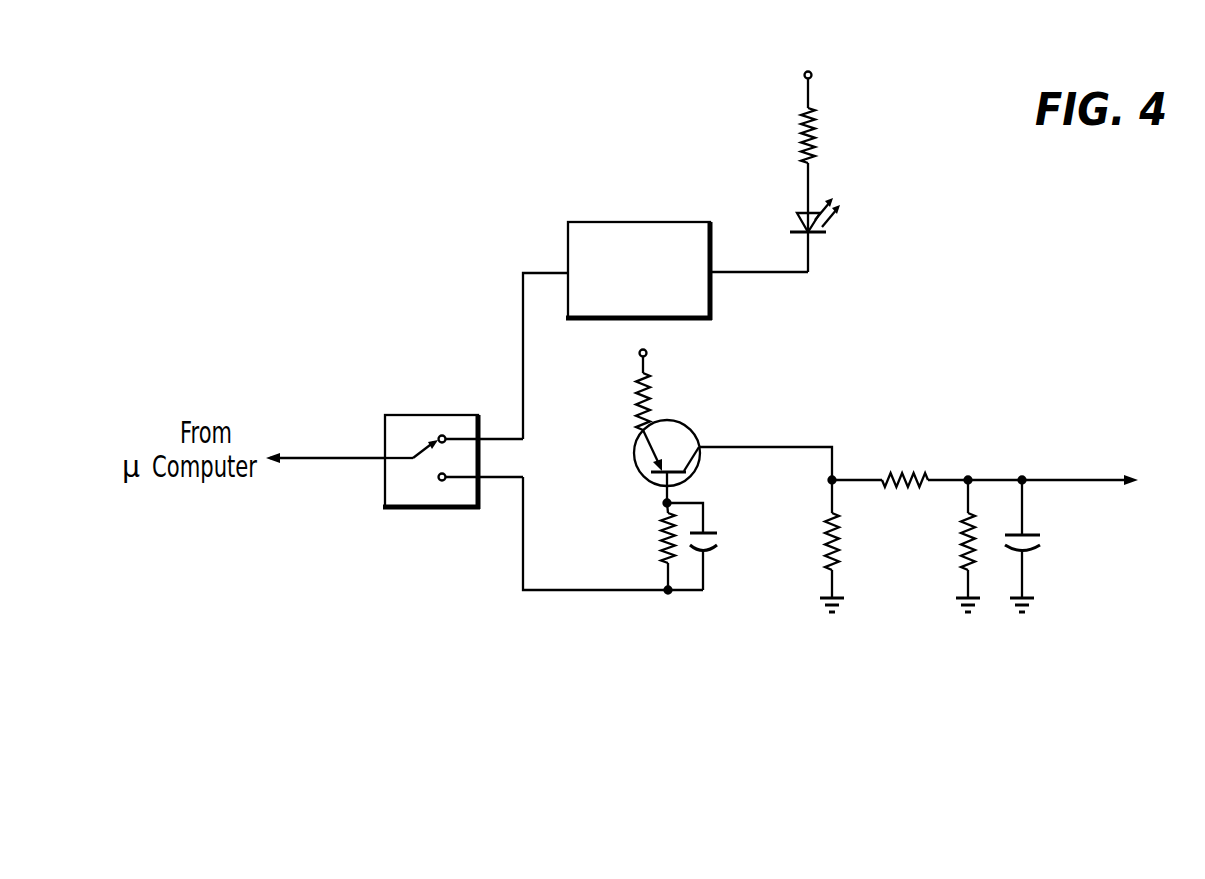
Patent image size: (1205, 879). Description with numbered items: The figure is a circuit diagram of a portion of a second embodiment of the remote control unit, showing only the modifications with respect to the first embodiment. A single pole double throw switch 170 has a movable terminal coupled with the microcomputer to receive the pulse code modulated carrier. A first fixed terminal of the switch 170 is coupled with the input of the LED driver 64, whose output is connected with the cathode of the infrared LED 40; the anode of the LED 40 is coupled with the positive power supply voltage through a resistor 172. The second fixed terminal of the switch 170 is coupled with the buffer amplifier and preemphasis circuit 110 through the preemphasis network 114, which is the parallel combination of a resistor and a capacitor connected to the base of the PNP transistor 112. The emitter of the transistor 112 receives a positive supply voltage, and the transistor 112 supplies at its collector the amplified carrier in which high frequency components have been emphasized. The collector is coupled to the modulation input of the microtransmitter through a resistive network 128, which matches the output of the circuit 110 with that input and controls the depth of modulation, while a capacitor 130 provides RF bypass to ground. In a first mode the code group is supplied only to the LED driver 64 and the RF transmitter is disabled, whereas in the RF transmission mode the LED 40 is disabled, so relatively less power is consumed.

The LED driver 64 is at (671, 222).
The infrared LED 40 is at (815, 236).
The resistor 172 is at (817, 134).
The single pole double throw switch 170 is at (458, 415).
The PNP transistor 112 is at (677, 423).
The buffer amplifier and preemphasis circuit 110 is at (767, 495).
The preemphasis network 114 is at (711, 559).
The resistive network 128 is at (917, 556).
The capacitor 130 is at (1030, 533).